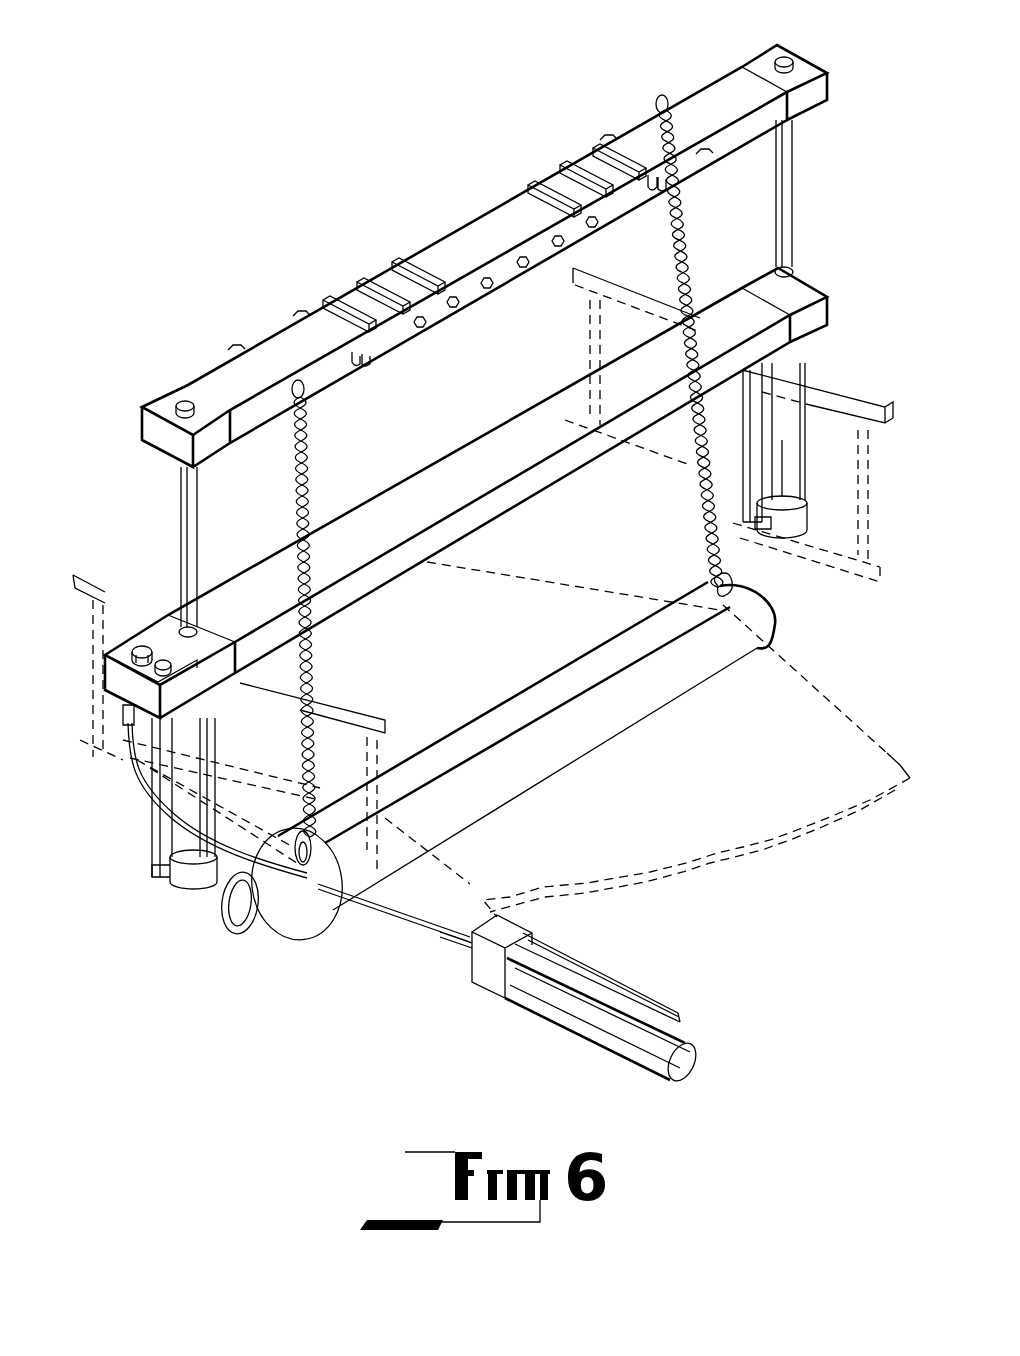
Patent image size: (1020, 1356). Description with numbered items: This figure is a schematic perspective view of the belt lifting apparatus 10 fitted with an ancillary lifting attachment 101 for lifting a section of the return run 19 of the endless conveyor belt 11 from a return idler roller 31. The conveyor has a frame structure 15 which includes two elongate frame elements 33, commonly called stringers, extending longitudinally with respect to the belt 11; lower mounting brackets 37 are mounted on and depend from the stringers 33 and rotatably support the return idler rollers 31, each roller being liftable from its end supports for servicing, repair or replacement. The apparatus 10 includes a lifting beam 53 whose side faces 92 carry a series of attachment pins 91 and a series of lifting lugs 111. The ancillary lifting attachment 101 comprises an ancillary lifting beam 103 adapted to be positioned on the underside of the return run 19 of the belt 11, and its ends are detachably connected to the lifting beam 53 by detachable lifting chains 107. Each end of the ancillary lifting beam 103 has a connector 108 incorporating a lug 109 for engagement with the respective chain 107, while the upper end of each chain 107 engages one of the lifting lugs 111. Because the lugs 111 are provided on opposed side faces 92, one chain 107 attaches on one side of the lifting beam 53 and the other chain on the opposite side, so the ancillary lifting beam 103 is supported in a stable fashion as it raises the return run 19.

The belt lifting apparatus 10 is at (729, 66).
The lifting beam 53 is at (745, 140).
The attachment pins 91 is at (487, 290).
The side faces 92 is at (517, 267).
The lifting lugs 111 is at (655, 115).
The lifting chains 107 is at (660, 104).
The return idler roller 31 is at (291, 917).
The ancillary lifting attachment 101 is at (776, 622).
The ancillary lifting beam 103 is at (733, 588).
The lug 109 is at (337, 897).
The connector 108 is at (257, 933).
The lower mounting brackets 37 is at (223, 870).
The frame structure 15 is at (96, 566).
The elongate frame elements 33 is at (845, 393).
The endless conveyor belt 11 is at (817, 697).
The return run 19 is at (877, 757).